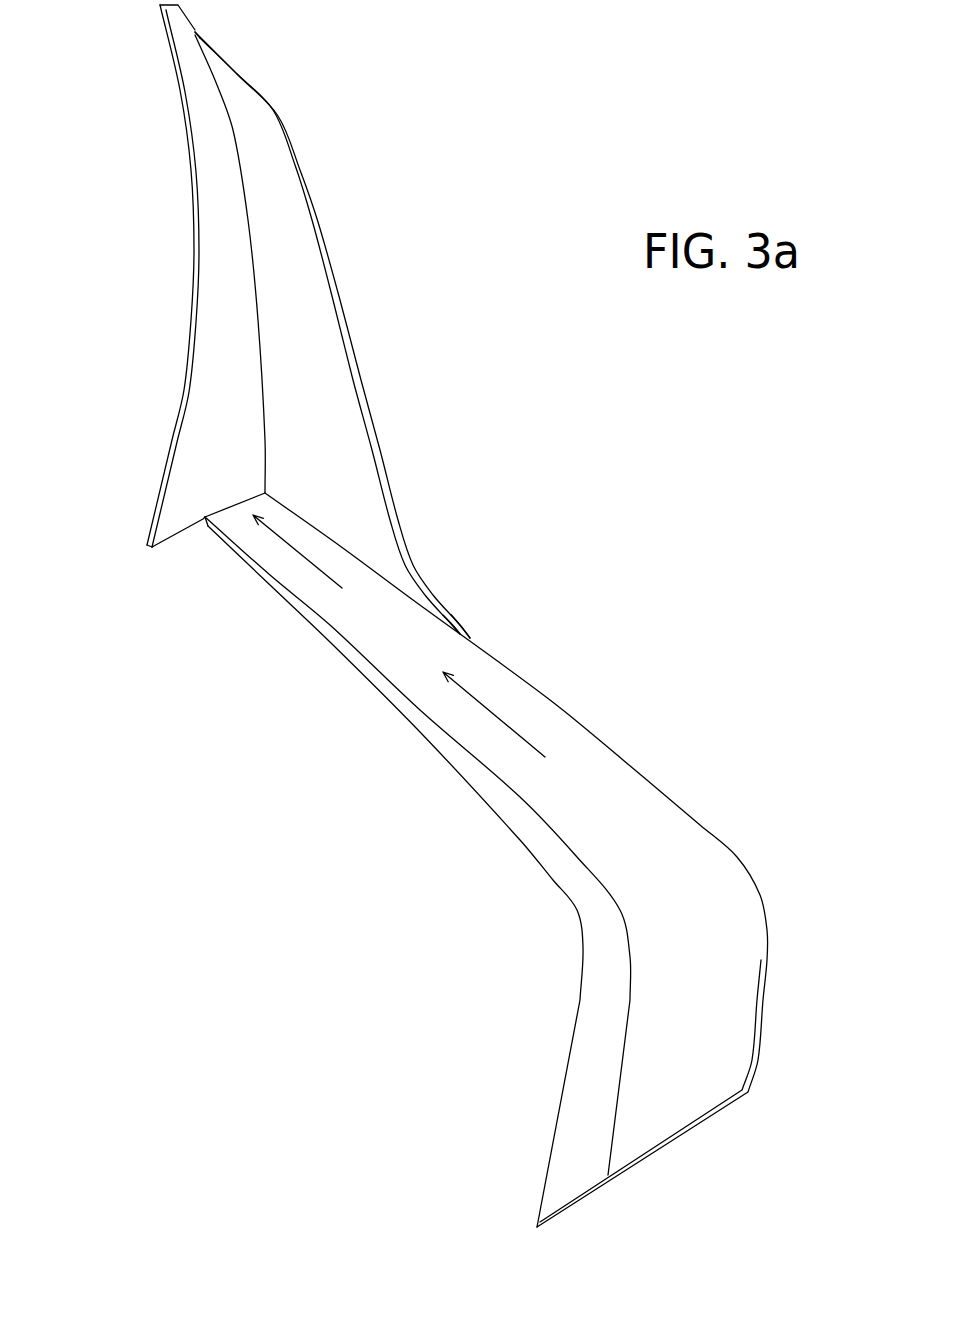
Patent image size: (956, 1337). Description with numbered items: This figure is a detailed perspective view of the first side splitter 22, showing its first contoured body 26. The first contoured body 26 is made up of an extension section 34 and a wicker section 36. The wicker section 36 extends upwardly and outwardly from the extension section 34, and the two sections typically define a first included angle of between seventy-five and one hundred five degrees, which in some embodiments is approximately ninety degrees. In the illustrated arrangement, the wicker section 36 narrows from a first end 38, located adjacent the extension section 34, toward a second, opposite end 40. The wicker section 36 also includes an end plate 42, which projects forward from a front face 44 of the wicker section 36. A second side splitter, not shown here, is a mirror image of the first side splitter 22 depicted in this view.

The first side splitter 22 is at (453, 240).
The first contoured body 26 is at (452, 613).
The extension section 34 is at (737, 857).
The wicker section 36 is at (170, 430).
The first end 38 is at (187, 535).
The second end 40 is at (163, 18).
The end plate 42 is at (337, 422).
The front face 44 is at (215, 262).